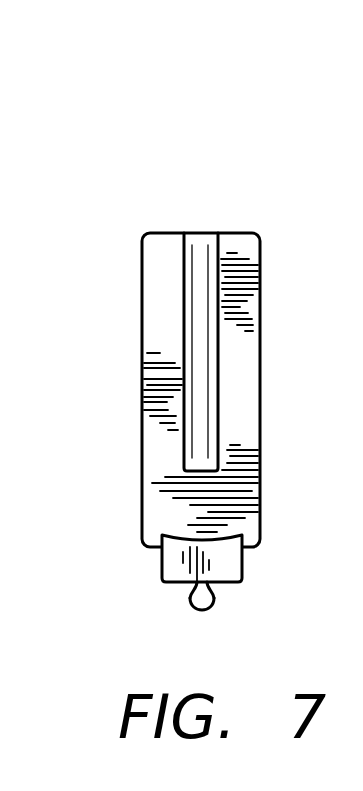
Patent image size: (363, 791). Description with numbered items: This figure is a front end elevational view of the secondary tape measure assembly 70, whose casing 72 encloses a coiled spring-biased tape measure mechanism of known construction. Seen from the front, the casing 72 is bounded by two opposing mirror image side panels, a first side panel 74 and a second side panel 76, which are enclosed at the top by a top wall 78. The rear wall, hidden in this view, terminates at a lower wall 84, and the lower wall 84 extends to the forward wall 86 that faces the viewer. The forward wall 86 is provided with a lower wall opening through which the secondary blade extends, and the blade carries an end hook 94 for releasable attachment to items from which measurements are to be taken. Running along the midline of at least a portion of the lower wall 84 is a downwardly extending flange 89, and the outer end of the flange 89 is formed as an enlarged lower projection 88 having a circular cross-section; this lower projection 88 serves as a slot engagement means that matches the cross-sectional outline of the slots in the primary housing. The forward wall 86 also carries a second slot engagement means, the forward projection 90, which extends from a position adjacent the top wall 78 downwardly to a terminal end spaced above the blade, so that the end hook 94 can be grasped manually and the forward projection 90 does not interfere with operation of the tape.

The secondary tape measure assembly 70 is at (117, 196).
The casing 72 is at (239, 234).
The first side panel 74 is at (141, 318).
The second side panel 76 is at (263, 420).
The top wall 78 is at (167, 233).
The lower wall 84 is at (247, 553).
The forward wall 86 is at (237, 352).
The lower projection 88 is at (208, 614).
The flange 89 is at (210, 585).
The forward projection 90 is at (190, 456).
The end hook 94 is at (167, 562).